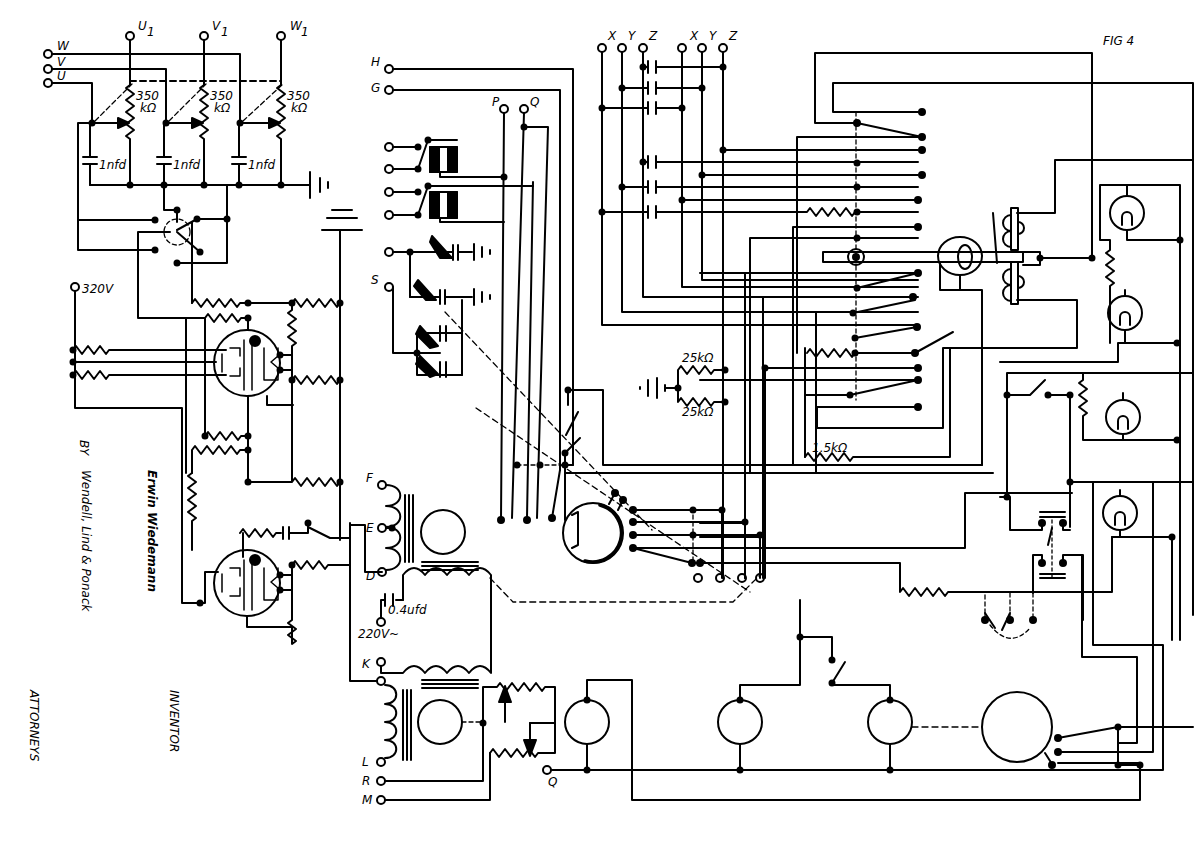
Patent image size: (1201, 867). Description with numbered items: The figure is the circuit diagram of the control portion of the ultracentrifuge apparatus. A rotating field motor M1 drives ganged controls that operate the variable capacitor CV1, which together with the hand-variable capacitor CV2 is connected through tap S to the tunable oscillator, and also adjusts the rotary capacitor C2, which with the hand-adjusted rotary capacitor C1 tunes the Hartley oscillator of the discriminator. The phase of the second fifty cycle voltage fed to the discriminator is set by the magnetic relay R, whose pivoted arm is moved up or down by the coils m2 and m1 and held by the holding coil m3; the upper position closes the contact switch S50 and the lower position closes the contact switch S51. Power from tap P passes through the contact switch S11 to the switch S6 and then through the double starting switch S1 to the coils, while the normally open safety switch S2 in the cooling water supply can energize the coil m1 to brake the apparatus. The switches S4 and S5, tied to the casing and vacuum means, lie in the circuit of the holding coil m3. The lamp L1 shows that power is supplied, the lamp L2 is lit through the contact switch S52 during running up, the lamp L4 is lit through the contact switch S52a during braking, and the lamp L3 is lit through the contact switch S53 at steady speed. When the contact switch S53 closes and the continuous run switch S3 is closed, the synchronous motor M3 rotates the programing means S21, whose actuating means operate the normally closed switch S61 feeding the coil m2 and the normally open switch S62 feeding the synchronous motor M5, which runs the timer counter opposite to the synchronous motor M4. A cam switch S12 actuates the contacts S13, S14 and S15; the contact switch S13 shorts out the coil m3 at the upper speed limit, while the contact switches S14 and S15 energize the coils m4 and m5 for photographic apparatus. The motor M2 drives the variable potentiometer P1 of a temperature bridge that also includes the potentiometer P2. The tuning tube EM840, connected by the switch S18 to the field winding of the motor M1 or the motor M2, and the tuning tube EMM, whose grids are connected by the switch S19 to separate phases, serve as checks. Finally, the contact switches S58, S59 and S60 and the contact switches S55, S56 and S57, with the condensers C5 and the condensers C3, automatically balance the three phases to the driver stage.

The switch S19 is at (184, 251).
The tuning tube EMM801 EMM is at (217, 375).
The tuning tube EM840 is at (285, 577).
The switch S18 is at (295, 519).
The motor M1 is at (443, 532).
The motor M2 is at (440, 722).
The synchronous motor M3 is at (890, 722).
The synchronous motor M4 is at (740, 722).
The synchronous motor M5 is at (587, 722).
The variable potentiometer P1 is at (548, 690).
The potentiometer P2 is at (520, 748).
The continuous run switch S3 is at (845, 668).
The programing means S21 is at (1018, 730).
The switch S61 is at (1086, 736).
The switch S62 is at (1075, 760).
The coil m4 is at (436, 159).
The coil m5 is at (451, 203).
The rotary capacitor C1 is at (429, 257).
The rotary capacitor C2 is at (450, 285).
The variable capacitor CV1 is at (431, 371).
The variable capacitor CV2 is at (430, 342).
The switch S4 is at (774, 427).
The switch S5 is at (578, 479).
The contact switch S11 is at (871, 544).
The cam switch S12 is at (614, 572).
The contact switch S13 is at (585, 530).
The contact switch S14 is at (533, 537).
The contact switch S15 is at (509, 540).
The condensers C3 is at (663, 83).
The condensers C5 is at (759, 182).
The contact switch S52 is at (936, 114).
The contact switch S53 is at (926, 139).
The contact switch S57 is at (918, 162).
The contact switch S56 is at (918, 187).
The contact switch S55 is at (921, 211).
The contact switch S50 is at (916, 238).
The contact switch S60 is at (813, 286).
The contact switch S59 is at (898, 316).
The contact switch S58 is at (893, 336).
The contact switch S51 is at (885, 338).
The contact switch S52a is at (868, 396).
The magnetic relay R is at (931, 256).
The holding coil m3 is at (962, 240).
The coil m2 is at (1025, 233).
The coil m1 is at (1025, 282).
The safety switch S2 is at (1099, 448).
The double starting switch S1 is at (1056, 600).
The switch S6 is at (1009, 629).
The lamp L1 is at (1139, 565).
The lamp L2 is at (1129, 409).
The lamp L3 is at (1144, 318).
The lamp L4 is at (1141, 264).